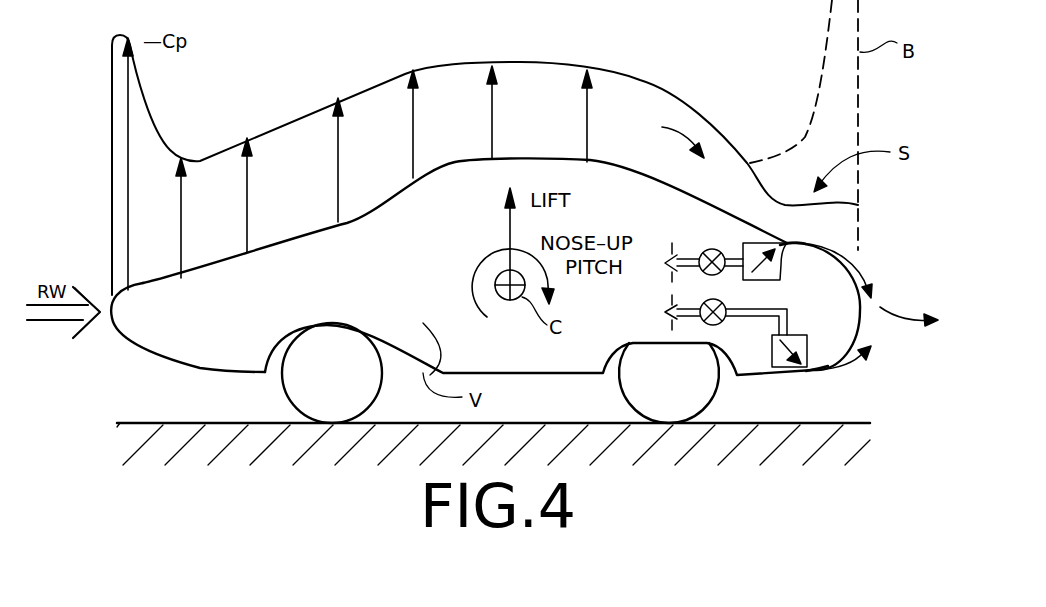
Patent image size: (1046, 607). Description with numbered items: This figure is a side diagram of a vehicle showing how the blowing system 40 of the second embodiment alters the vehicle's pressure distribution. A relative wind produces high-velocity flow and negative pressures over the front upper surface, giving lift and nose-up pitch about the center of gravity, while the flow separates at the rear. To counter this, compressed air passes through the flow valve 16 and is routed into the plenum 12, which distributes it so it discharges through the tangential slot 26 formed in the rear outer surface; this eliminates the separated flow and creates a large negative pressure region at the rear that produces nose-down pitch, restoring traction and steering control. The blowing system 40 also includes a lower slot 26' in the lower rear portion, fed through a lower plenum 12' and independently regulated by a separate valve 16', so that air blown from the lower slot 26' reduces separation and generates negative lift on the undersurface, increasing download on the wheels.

The plenum 12 is at (742, 250).
The lower plenum 12' is at (778, 326).
The flow valve 16 is at (690, 241).
The valve 16' is at (692, 342).
The tangential slot 26 is at (812, 228).
The lower slot 26' is at (817, 391).
The blowing system 40 is at (668, 135).